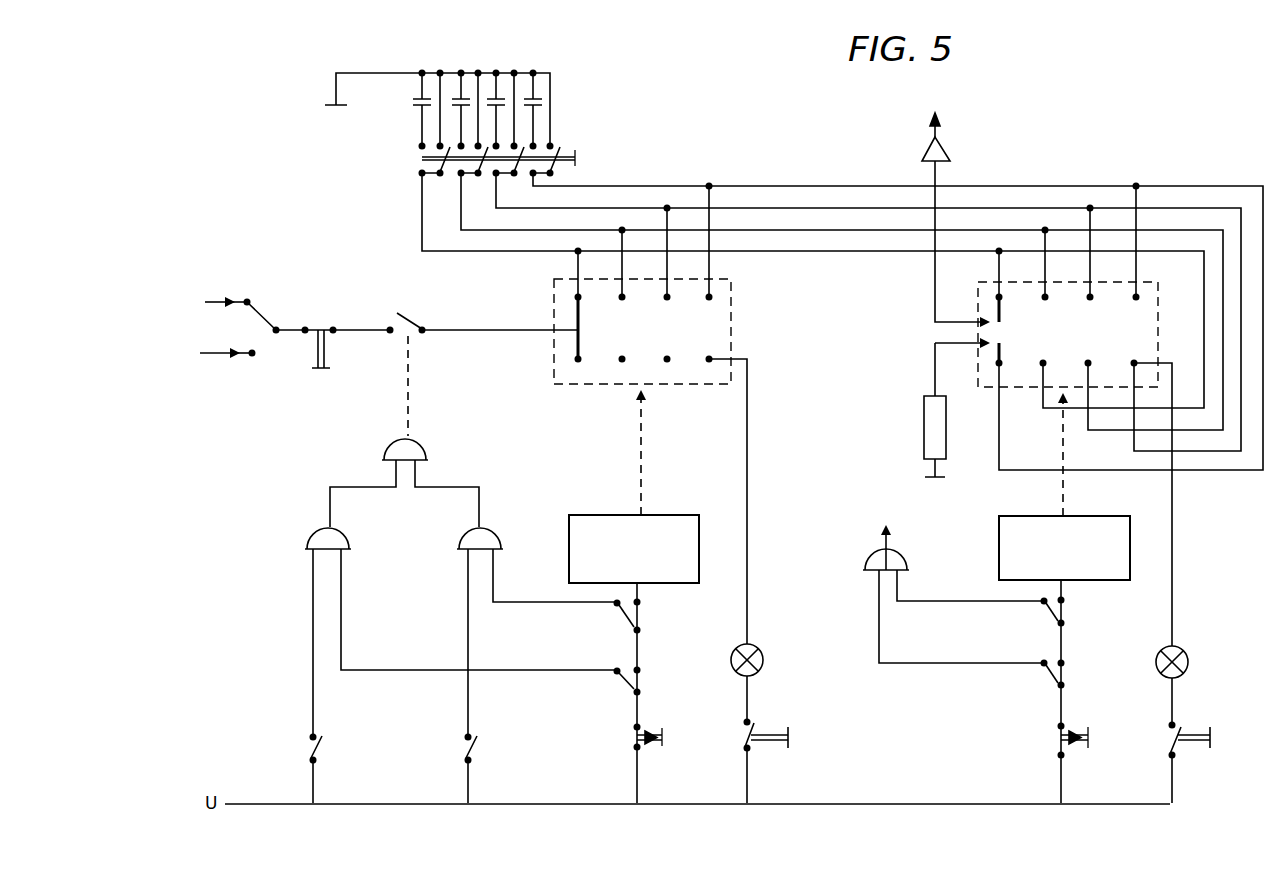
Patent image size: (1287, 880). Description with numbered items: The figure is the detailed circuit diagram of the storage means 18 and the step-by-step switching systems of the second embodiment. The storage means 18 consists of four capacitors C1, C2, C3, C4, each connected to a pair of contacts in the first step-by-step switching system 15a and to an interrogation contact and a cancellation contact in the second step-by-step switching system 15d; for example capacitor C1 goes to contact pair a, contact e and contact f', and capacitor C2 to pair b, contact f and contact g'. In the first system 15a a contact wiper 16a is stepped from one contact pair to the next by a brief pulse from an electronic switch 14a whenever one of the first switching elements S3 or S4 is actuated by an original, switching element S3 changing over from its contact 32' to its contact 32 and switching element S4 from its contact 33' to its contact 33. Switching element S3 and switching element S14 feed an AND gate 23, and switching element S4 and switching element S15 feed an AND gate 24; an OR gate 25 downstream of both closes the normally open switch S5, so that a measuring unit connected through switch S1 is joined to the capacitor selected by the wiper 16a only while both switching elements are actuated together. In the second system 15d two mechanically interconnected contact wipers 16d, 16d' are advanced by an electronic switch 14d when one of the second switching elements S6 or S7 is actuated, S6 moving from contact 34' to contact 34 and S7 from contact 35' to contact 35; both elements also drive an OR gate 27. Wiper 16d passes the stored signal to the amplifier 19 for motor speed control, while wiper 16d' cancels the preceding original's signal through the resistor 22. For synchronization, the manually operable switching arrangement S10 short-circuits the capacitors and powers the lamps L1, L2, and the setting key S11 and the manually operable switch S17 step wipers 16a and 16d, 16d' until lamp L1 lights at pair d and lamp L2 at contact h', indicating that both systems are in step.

The storage means 18 is at (476, 160).
The manually operable switching arrangement S10 is at (776, 476).
The capacitor C1 is at (422, 96).
The capacitor C2 is at (461, 96).
The capacitor C3 is at (497, 96).
The capacitor C4 is at (534, 96).
The first step-by-step switching system 15a is at (707, 323).
The contact wiper 16a is at (575, 351).
The electronic switch 14a is at (670, 515).
The OR gate 25 is at (420, 452).
The AND gate 24 is at (318, 539).
The AND gate 23 is at (470, 539).
The OR gate 27 is at (866, 565).
The switch S1 is at (295, 347).
The normally open switch S5 is at (410, 314).
The first switching element S3 is at (646, 624).
The first switching element S4 is at (646, 693).
The manually operable setting key S11 is at (660, 748).
The switching element S14 is at (486, 769).
The switching element S15 is at (331, 769).
The second switching element S6 is at (1069, 620).
The second switching element S7 is at (1068, 684).
The manually operable switch S17 is at (1084, 748).
The lamp L1 is at (766, 683).
The lamp L2 is at (1191, 685).
The contact 32 is at (607, 616).
The contact 32' is at (655, 604).
The contact 33 is at (607, 685).
The contact 33' is at (655, 674).
The contact 34 is at (1035, 613).
The contact 34' is at (1080, 599).
The contact 35 is at (1032, 674).
The contact 35' is at (1077, 660).
The amplifier 19 is at (950, 151).
The resistor 22 is at (923, 426).
The second step-by-step switching system 15d is at (1158, 298).
The contact wiper 16d is at (967, 307).
The contact wiper 16d' is at (967, 359).
The electronic switch 14d is at (1118, 516).